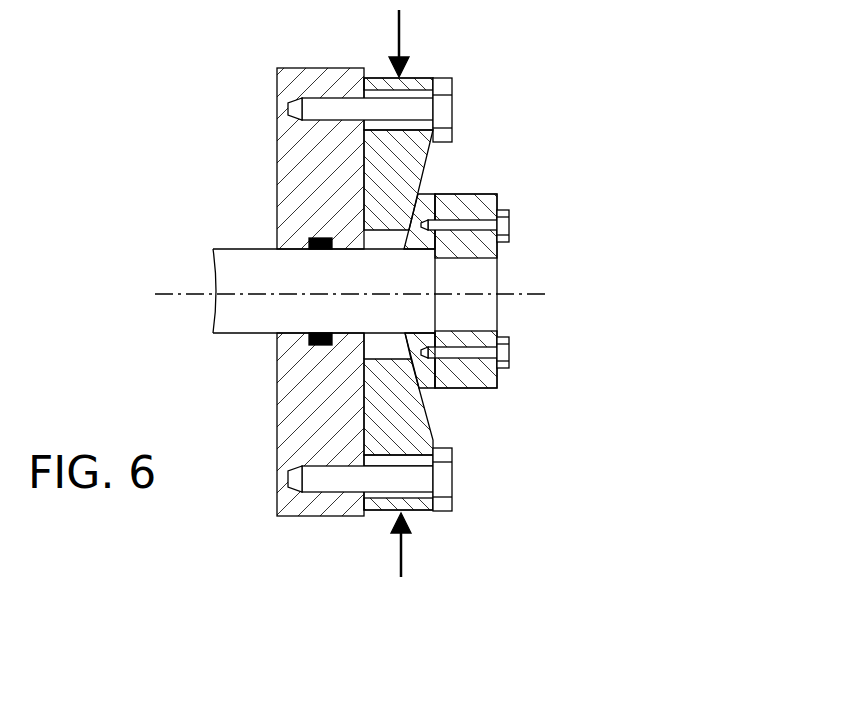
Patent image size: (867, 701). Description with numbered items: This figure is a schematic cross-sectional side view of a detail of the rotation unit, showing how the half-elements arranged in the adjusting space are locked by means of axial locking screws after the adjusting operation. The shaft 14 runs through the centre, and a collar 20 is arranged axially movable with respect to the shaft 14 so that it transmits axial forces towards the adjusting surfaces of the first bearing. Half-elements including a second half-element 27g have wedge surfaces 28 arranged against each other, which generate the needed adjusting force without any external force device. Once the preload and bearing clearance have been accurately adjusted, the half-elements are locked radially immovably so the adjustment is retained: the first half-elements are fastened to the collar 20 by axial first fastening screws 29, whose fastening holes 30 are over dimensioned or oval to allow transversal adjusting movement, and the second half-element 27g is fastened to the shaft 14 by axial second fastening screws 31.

The shaft 14 is at (227, 318).
The collar 20 is at (293, 158).
The second half-element 27g is at (427, 192).
The wedge surface 28 is at (407, 340).
The first fastening screw 29 is at (417, 108).
The fastening hole 30 is at (408, 93).
The second fastening screw 31 is at (472, 225).